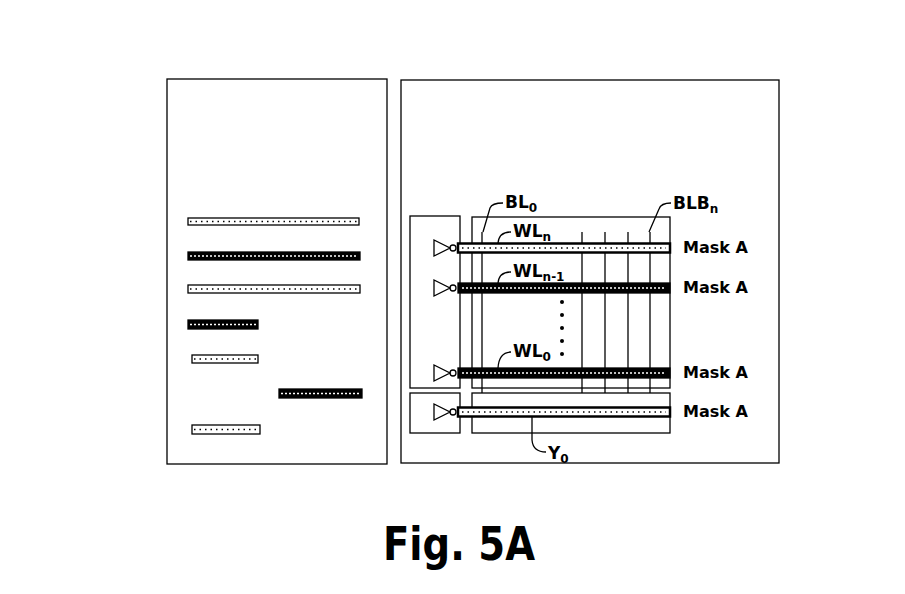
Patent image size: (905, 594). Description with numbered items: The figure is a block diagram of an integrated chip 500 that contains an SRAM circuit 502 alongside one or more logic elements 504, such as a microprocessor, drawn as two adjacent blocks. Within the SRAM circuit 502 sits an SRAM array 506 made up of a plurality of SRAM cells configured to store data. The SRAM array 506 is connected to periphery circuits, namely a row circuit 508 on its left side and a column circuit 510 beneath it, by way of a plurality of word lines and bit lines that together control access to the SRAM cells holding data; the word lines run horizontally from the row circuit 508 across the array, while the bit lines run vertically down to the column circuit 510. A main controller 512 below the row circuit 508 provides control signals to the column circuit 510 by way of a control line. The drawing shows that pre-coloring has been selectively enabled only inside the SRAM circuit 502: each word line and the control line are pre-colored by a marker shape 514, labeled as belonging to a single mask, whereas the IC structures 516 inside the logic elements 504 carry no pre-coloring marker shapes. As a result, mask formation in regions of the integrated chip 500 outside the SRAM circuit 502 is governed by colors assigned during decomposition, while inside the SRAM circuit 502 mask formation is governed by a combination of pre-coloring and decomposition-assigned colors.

The integrated chip 500 is at (402, 259).
The SRAM circuit 502 is at (679, 124).
The logic elements 504 is at (297, 184).
The SRAM array 506 is at (640, 217).
The row circuit 508 is at (437, 216).
The column circuit 510 is at (655, 433).
The main controller 512 is at (440, 433).
The marker shape 514 is at (573, 243).
The IC structures 516 is at (299, 316).